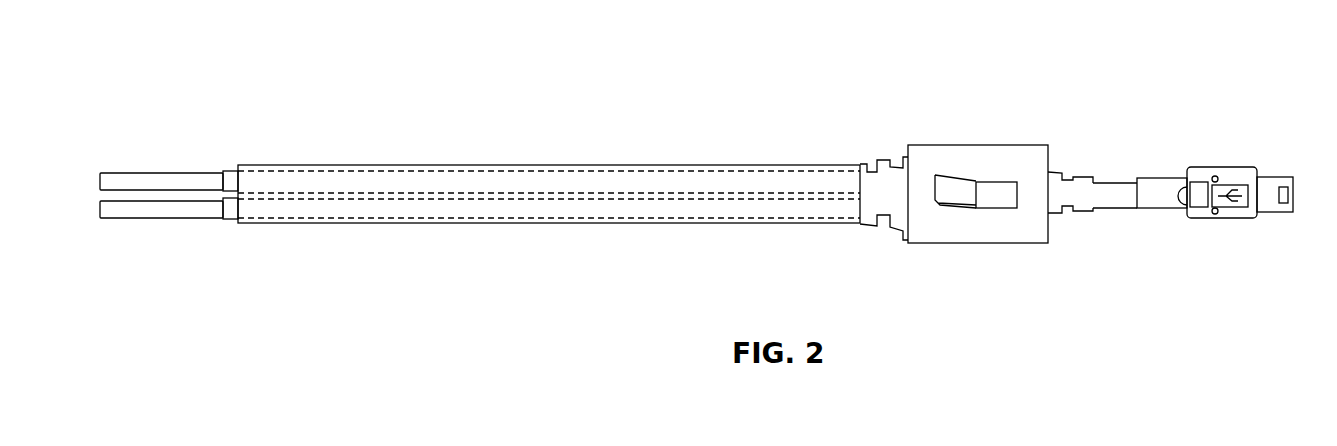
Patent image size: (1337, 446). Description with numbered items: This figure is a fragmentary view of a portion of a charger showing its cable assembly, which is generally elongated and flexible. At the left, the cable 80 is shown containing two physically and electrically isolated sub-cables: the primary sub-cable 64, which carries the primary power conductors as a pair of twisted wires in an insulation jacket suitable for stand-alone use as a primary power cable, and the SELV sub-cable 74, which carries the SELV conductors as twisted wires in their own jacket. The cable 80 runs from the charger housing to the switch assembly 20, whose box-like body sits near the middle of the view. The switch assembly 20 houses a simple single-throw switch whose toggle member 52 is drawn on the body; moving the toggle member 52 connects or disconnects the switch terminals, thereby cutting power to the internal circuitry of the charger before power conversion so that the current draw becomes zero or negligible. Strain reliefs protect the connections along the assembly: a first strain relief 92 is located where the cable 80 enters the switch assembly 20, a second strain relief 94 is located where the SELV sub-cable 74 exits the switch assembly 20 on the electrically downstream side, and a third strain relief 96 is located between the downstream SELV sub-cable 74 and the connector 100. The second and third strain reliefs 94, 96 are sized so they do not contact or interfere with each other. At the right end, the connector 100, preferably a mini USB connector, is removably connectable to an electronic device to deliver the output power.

The switch assembly 20 is at (990, 108).
The toggle member 52 is at (938, 174).
The sub-cable 64 is at (229, 171).
The sub-cable 74 is at (229, 220).
The cable 80 is at (480, 262).
The first strain relief 92 is at (889, 154).
The second strain relief 94 is at (1072, 168).
The third strain relief 96 is at (1165, 171).
The connector 100 is at (1272, 174).